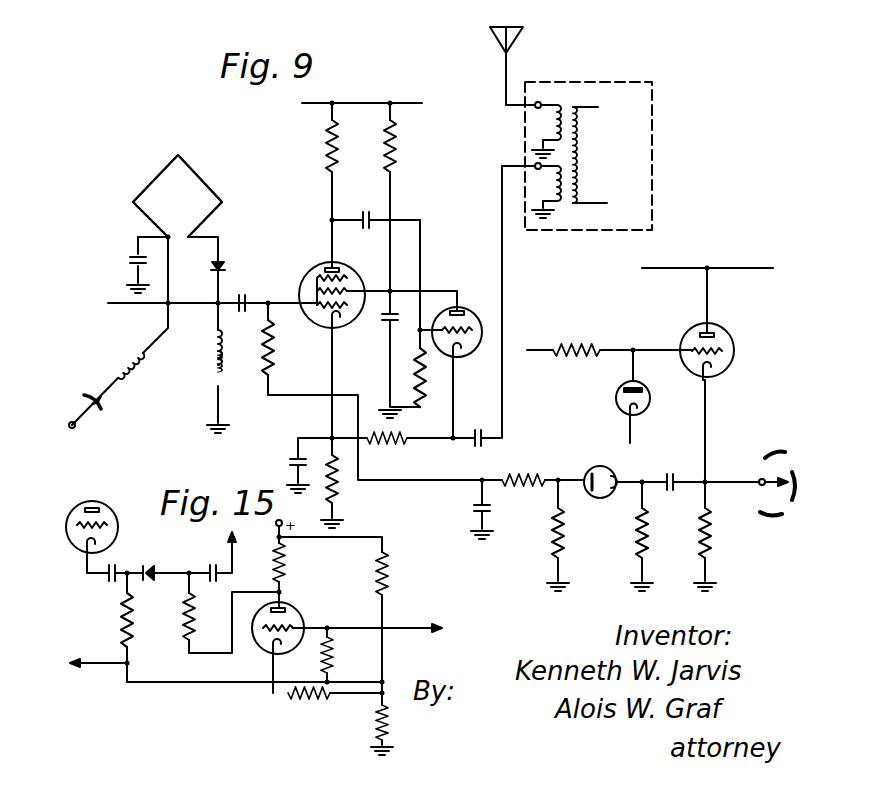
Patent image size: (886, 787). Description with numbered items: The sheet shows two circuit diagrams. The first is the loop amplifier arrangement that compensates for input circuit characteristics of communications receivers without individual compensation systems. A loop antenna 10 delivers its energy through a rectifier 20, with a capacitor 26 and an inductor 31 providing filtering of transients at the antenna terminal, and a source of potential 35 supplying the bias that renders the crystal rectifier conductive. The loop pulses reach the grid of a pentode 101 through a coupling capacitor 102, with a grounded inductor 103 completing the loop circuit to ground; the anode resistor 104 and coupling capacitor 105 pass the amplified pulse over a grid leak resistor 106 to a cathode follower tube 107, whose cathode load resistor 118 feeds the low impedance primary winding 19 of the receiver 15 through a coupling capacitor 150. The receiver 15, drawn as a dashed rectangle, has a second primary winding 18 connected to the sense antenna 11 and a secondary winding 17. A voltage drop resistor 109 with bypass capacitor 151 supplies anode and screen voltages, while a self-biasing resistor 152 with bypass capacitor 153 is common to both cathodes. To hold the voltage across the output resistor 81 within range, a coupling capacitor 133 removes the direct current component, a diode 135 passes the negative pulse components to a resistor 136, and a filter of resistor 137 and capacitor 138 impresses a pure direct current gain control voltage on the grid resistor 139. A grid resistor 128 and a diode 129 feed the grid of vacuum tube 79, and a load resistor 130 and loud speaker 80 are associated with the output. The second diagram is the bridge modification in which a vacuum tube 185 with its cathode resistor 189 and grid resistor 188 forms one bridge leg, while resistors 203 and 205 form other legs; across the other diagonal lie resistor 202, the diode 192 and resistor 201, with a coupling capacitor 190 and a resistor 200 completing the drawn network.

In FIG. 9, the loop antenna 10 is at (203, 182).
In FIG. 9, the sense antenna 11 is at (490, 33).
In FIG. 9, the communications receiver 15 is at (598, 82).
In FIG. 9, the secondary winding 17 is at (578, 168).
In FIG. 9, the primary winding 18 is at (545, 122).
In FIG. 9, the primary winding 19 is at (545, 183).
In FIG. 9, the rectifier 20 is at (226, 270).
In FIG. 9, the capacitor 26 is at (130, 260).
In FIG. 9, the inductor 31 is at (87, 419).
In FIG. 9, the source of potential 35 is at (126, 360).
In FIG. 9, the vacuum tube 79 is at (728, 338).
In FIG. 9, the loud speaker 80 is at (762, 470).
In FIG. 9, the output resistor 81 is at (700, 546).
In FIG. 9, the tube 101 is at (314, 270).
In FIG. 9, the condenser 102 is at (244, 297).
In FIG. 9, the coil 103 is at (212, 373).
In FIG. 9, the resistor 104 is at (325, 143).
In FIG. 9, the condenser 105 is at (368, 214).
In FIG. 9, the resistor 106 is at (421, 398).
In FIG. 9, the tube 107 is at (462, 308).
In FIG. 15, the tube 107 is at (80, 508).
In FIG. 9, the resistor 109 is at (396, 148).
In FIG. 9, the resistor 118 is at (374, 443).
In FIG. 9, the grid resistor 128 is at (572, 348).
In FIG. 9, the diode 129 is at (614, 398).
In FIG. 9, the resistor 130 is at (641, 546).
In FIG. 9, the coupling capacitor 133 is at (682, 469).
In FIG. 9, the diode vacuum tube 135 is at (616, 462).
In FIG. 9, the resistor 136 is at (552, 546).
In FIG. 9, the resistor 137 is at (546, 468).
In FIG. 9, the capacitor 138 is at (478, 511).
In FIG. 9, the grid resistor 139 is at (275, 358).
In FIG. 9, the coupling capacitor 150 is at (479, 433).
In FIG. 15, the coupling capacitor 150 is at (214, 566).
In FIG. 9, the bypass capacitor 151 is at (380, 324).
In FIG. 9, the self-biasing resistor 152 is at (337, 488).
In FIG. 9, the bypass capacitor 153 is at (290, 460).
In FIG. 15, the vacuum tube 185 is at (298, 612).
In FIG. 15, the grid resistor 188 is at (333, 652).
In FIG. 15, the cathode resistor 189 is at (312, 702).
In FIG. 15, the condenser 190 is at (110, 580).
In FIG. 15, the diode rectifier 192 is at (160, 552).
In FIG. 15, the resistor 200 is at (377, 721).
In FIG. 15, the resistor 201 is at (186, 627).
In FIG. 15, the resistor 202 is at (120, 640).
In FIG. 15, the resistor 203 is at (286, 560).
In FIG. 15, the resistor 205 is at (376, 578).